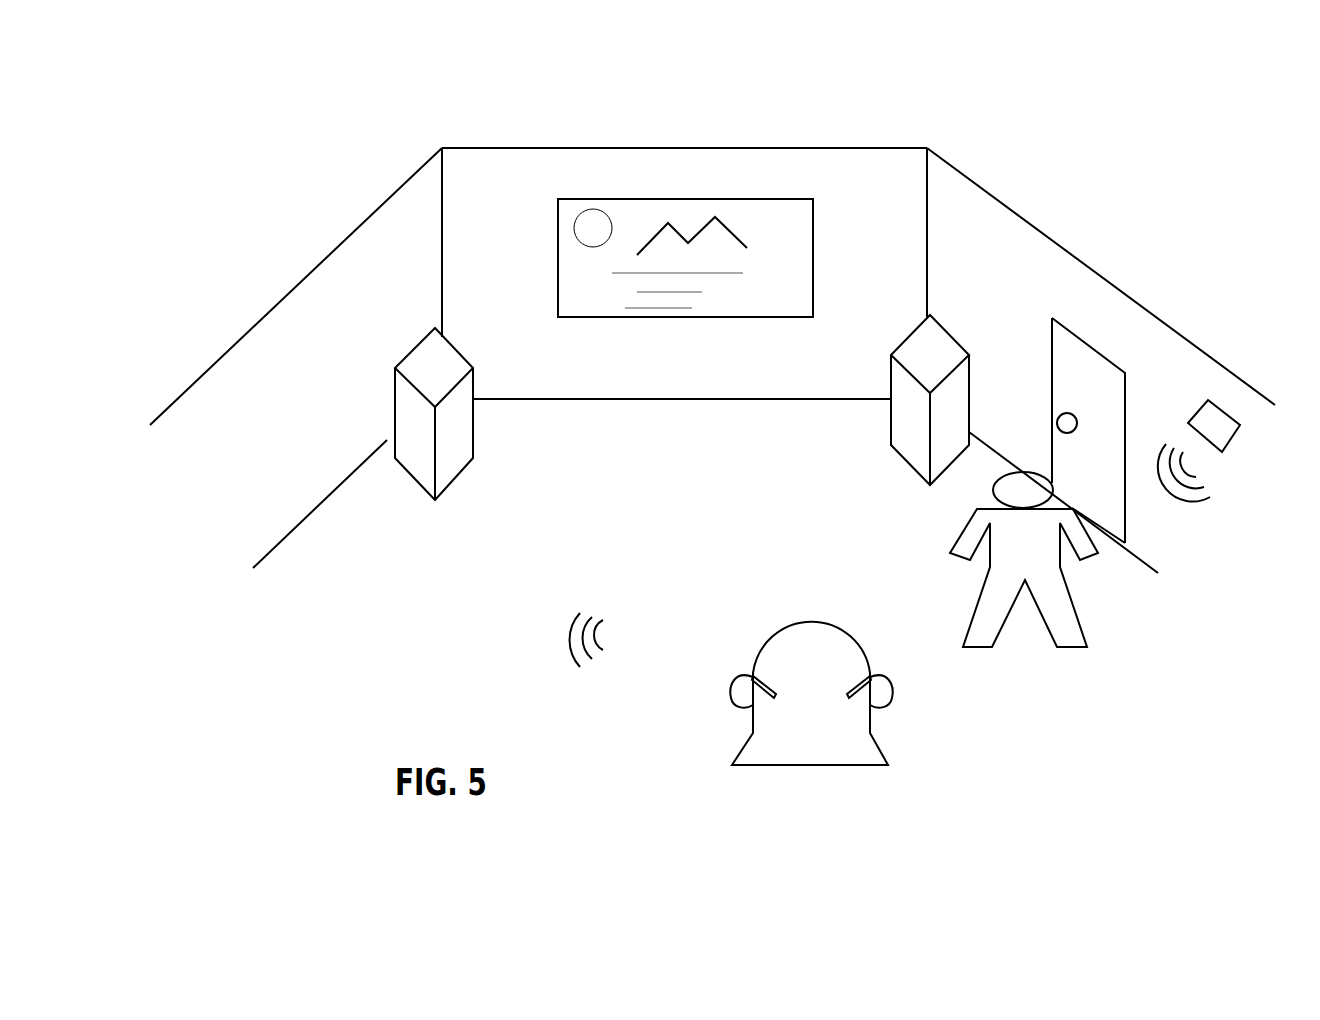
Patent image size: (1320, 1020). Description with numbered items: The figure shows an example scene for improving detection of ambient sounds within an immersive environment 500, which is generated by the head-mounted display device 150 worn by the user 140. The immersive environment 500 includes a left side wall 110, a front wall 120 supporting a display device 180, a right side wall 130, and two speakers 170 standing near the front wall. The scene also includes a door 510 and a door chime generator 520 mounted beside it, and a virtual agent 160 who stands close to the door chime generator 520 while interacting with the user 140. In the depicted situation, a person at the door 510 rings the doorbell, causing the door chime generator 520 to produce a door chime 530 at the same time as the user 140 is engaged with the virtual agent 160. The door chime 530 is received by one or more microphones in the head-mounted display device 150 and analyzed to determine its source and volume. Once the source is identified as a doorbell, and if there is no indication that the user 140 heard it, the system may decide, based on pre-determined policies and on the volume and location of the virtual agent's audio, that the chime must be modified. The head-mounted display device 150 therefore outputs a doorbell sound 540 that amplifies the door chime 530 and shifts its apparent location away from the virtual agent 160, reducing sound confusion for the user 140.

The immersive environment 500 is at (268, 100).
The left side wall 110 is at (337, 243).
The front wall 120 is at (788, 148).
The right side wall 130 is at (1068, 248).
The display device 180 is at (697, 199).
The speakers 170 is at (453, 347).
The door 510 is at (1067, 323).
The door chime generator 520 is at (1238, 433).
The door chime 530 is at (1217, 495).
The virtual agent 160 is at (1072, 600).
The user 140 is at (745, 742).
The head-mounted display device 150 is at (760, 664).
The doorbell sound 540 is at (607, 672).